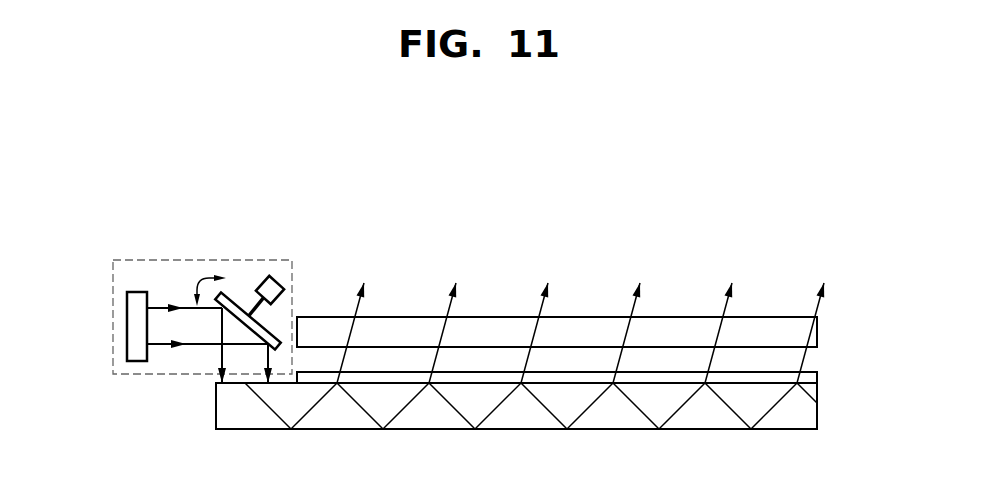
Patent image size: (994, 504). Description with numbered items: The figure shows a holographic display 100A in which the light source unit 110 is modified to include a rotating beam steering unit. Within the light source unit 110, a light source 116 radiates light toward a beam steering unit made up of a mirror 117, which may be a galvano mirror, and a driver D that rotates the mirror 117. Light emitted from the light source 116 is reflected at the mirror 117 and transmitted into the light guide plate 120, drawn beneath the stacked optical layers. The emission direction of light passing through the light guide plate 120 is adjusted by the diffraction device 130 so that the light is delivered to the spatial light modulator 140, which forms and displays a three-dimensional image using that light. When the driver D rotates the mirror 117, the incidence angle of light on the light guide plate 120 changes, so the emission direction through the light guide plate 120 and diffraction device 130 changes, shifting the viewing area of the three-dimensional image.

The holographic display 100A is at (134, 176).
The light source unit 110 is at (193, 258).
The light source 116 is at (143, 292).
The mirror 117 is at (236, 300).
The driver D is at (274, 287).
The light guide plate 120 is at (812, 412).
The diffraction device 130 is at (815, 378).
The spatial light modulator 140 is at (815, 340).